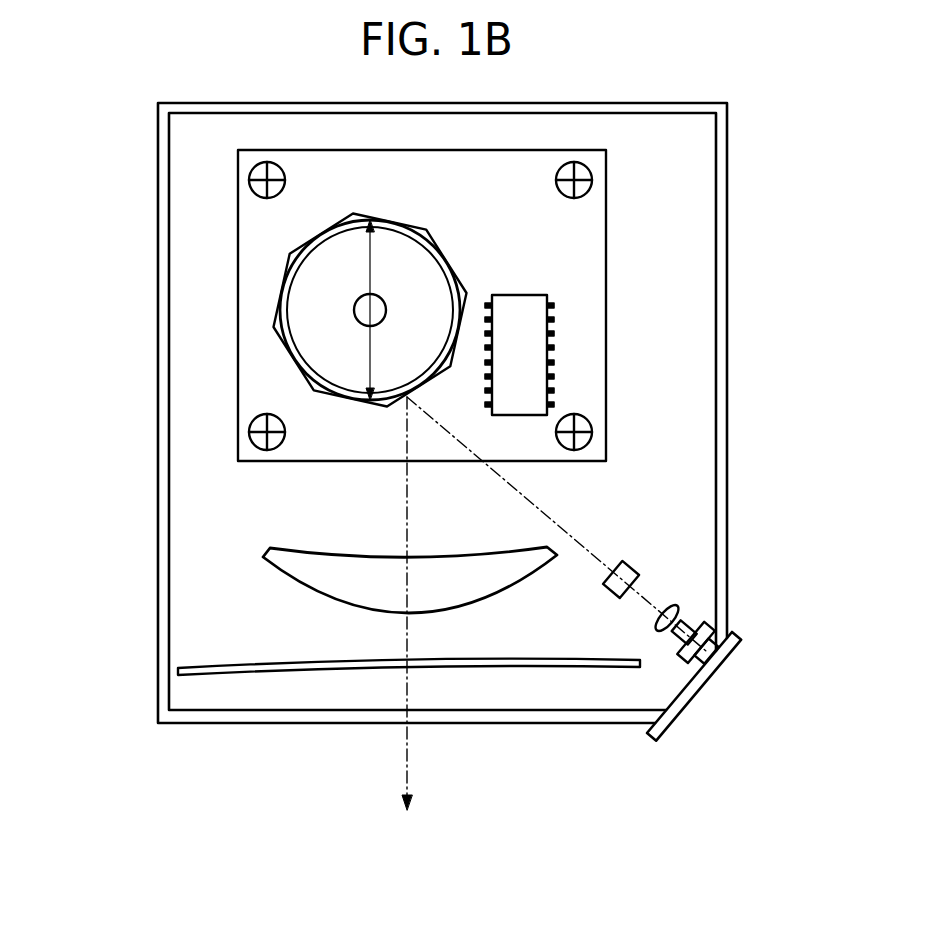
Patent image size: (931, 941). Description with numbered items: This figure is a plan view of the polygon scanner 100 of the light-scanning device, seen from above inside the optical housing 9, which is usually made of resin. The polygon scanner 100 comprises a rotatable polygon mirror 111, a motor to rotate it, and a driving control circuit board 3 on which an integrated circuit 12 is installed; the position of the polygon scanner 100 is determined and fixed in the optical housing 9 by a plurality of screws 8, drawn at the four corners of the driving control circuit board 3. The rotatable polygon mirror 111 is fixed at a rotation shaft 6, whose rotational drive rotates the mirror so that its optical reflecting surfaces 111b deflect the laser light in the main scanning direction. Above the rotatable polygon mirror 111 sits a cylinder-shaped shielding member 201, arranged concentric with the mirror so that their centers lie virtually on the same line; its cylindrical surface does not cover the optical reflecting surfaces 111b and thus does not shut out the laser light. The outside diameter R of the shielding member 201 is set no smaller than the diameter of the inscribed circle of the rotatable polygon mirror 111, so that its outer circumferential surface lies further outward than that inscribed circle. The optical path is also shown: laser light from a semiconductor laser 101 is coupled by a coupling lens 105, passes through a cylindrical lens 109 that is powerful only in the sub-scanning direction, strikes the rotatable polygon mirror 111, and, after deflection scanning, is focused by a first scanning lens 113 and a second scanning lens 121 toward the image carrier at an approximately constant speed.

The polygon scanner 100 is at (213, 270).
The optical housing 9 is at (158, 612).
The driving control circuit board 3 is at (600, 303).
The screw 8 is at (590, 170).
The shielding member 201 is at (285, 352).
The rotatable polygon mirror 111 is at (375, 216).
The optical reflecting surface 111b is at (440, 378).
The rotation shaft 6 is at (359, 299).
The outside diameter of the shielding member R is at (371, 361).
The integrated circuit 12 is at (525, 303).
The first scanning lens 113 is at (312, 556).
The second scanning lens 121 is at (292, 664).
The cylindrical lens 109 is at (630, 566).
The coupling lens 105 is at (672, 611).
The semiconductor laser 101 is at (705, 630).